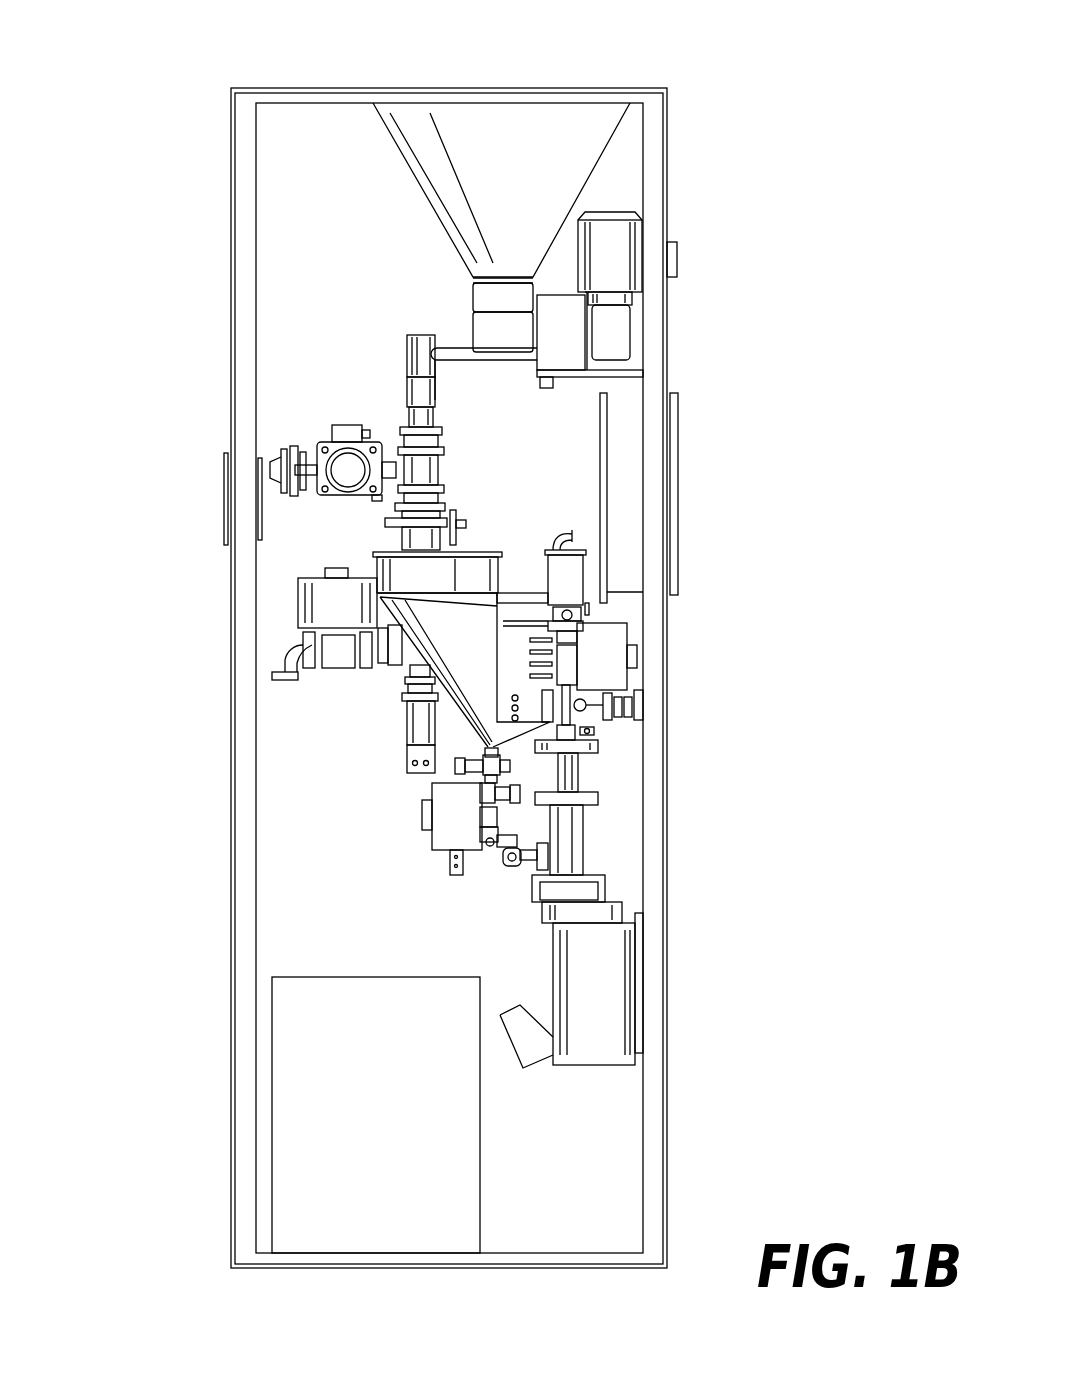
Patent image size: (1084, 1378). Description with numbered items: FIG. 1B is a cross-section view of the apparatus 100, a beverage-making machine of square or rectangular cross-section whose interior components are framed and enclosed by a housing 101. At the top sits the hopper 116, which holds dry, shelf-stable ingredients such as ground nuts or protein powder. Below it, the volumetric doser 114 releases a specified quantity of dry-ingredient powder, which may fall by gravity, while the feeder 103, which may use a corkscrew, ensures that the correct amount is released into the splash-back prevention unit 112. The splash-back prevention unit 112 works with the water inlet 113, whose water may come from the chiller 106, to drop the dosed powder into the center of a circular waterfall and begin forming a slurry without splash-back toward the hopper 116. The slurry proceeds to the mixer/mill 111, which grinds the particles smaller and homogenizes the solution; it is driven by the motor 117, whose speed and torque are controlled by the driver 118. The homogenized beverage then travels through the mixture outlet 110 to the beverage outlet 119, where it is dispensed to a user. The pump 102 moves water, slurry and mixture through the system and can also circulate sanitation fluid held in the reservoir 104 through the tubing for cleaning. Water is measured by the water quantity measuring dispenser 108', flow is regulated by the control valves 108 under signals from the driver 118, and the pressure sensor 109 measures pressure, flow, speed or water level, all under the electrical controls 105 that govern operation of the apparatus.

The apparatus 100 is at (133, 86).
The housing 101 is at (660, 128).
The pump 102 is at (607, 987).
The feeder 103 is at (625, 333).
The reservoir 104 is at (512, 663).
The electrical controls 105 is at (628, 490).
The chiller 106 is at (288, 1148).
The control valves 108 is at (258, 573).
The water quantity measuring dispenser 108' is at (553, 526).
The pressure sensor 109 is at (585, 620).
The mixture outlet 110 is at (387, 647).
The mixer/mill 111 is at (393, 660).
The splash-back prevention unit 112 is at (417, 413).
The water inlet 113 is at (383, 440).
The volumetric doser 114 is at (497, 298).
The hopper 116 is at (523, 118).
The motor 117 is at (418, 720).
The driver 118 is at (417, 755).
The beverage outlet 119 is at (300, 673).